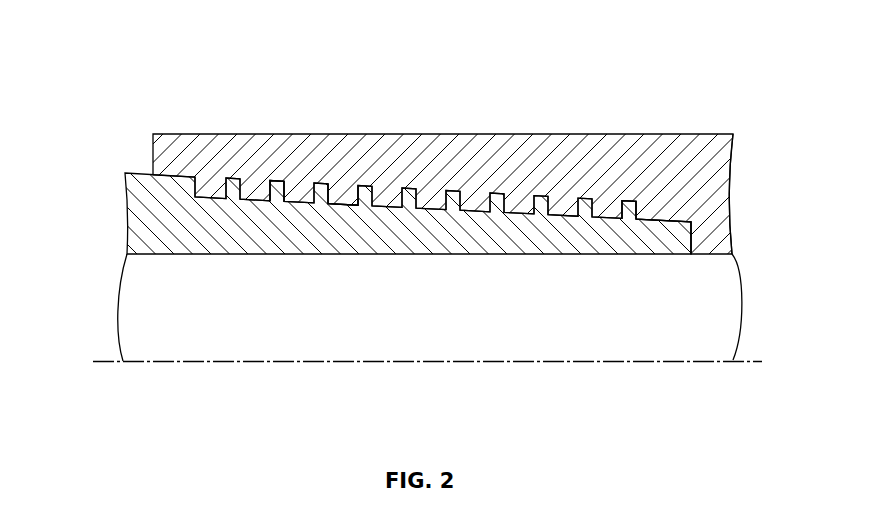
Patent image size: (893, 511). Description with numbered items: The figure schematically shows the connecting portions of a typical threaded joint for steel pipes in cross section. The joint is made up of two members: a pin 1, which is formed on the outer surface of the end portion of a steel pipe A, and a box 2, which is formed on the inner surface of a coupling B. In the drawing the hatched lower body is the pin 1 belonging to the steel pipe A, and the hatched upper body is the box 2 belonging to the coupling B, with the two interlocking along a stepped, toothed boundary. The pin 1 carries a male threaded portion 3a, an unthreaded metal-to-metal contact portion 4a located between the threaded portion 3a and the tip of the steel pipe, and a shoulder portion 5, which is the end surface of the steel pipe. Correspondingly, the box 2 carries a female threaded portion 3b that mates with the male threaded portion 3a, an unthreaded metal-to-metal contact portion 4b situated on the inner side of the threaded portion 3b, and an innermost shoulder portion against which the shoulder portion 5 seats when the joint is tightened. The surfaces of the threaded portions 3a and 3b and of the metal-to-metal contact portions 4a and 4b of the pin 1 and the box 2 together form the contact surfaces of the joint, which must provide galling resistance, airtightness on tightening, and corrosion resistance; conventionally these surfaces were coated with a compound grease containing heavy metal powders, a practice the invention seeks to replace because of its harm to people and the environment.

The pin 1 is at (121, 219).
The box 2 is at (563, 109).
The male threaded portion 3a is at (280, 180).
The female threaded portion 3b is at (345, 205).
The unthreaded metal-to-metal contact portion 4a is at (645, 220).
The unthreaded metal-to-metal contact portion 4b is at (672, 222).
The shoulder portion 5 is at (694, 243).
The steel pipe A is at (190, 324).
The coupling B is at (453, 72).